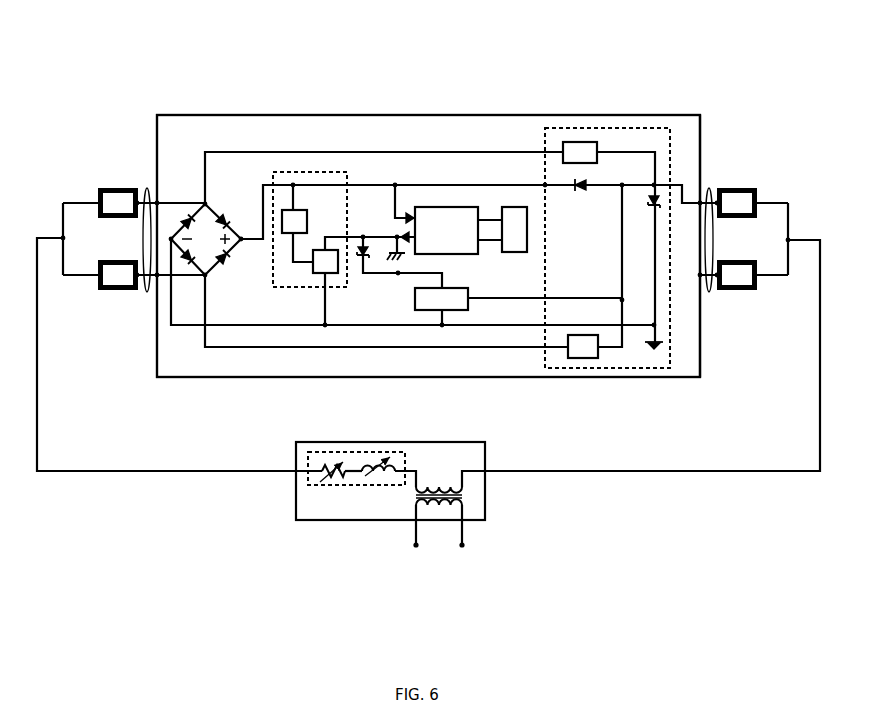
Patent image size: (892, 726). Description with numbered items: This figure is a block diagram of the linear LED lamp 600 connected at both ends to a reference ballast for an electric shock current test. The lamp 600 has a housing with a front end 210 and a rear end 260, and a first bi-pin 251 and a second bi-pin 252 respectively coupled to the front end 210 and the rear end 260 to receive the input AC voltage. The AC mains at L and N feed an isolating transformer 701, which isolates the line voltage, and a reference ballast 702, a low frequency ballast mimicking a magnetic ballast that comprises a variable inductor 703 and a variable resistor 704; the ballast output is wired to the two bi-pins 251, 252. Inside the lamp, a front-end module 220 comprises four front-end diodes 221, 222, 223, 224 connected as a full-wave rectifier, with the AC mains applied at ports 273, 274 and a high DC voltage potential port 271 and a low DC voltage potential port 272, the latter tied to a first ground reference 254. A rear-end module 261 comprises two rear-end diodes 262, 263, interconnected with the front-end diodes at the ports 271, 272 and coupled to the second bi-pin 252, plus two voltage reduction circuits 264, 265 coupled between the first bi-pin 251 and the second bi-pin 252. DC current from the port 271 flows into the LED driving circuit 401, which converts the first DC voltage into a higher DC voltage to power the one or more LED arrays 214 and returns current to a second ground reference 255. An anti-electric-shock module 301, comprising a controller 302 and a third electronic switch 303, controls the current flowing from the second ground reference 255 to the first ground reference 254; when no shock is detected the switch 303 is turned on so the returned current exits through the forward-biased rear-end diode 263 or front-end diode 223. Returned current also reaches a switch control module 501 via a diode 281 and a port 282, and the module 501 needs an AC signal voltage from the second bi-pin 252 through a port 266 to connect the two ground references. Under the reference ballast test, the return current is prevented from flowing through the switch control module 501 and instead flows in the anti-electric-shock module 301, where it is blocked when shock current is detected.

The linear LED lamp 600 is at (361, 111).
The front end 210 is at (154, 112).
The rear end 260 is at (702, 113).
The front-end module 220 is at (201, 225).
The front-end diode 221 is at (220, 214).
The front-end diode 222 is at (226, 263).
The front-end diode 223 is at (186, 217).
The front-end diode 224 is at (190, 265).
The high DC voltage potential port 271 is at (242, 237).
The low DC voltage potential port 272 is at (171, 241).
The port 273 is at (204, 202).
The port 274 is at (206, 277).
The first bi-pin 251 is at (146, 192).
The second bi-pin 252 is at (710, 192).
The anti-electric-shock module 301 is at (301, 271).
The controller 302 is at (298, 210).
The third at least one electronic switch 303 is at (330, 274).
The LED driving circuit 401 is at (439, 205).
The LED arrays 214 is at (515, 206).
The second ground reference 255 is at (391, 252).
The diode 281 is at (364, 257).
The port 282 is at (399, 275).
The switch control module 501 is at (462, 312).
The rear-end module 261 is at (623, 240).
The rear-end diode 262 is at (582, 191).
The rear-end diode 263 is at (650, 201).
The voltage reduction circuit 264 is at (582, 141).
The voltage reduction circuit 265 is at (586, 359).
The port 266 is at (620, 299).
The first ground reference 254 is at (656, 351).
The isolating transformer 701 is at (466, 498).
The reference ballast 702 is at (339, 489).
The variable inductor 703 is at (383, 473).
The variable resistor 704 is at (326, 509).